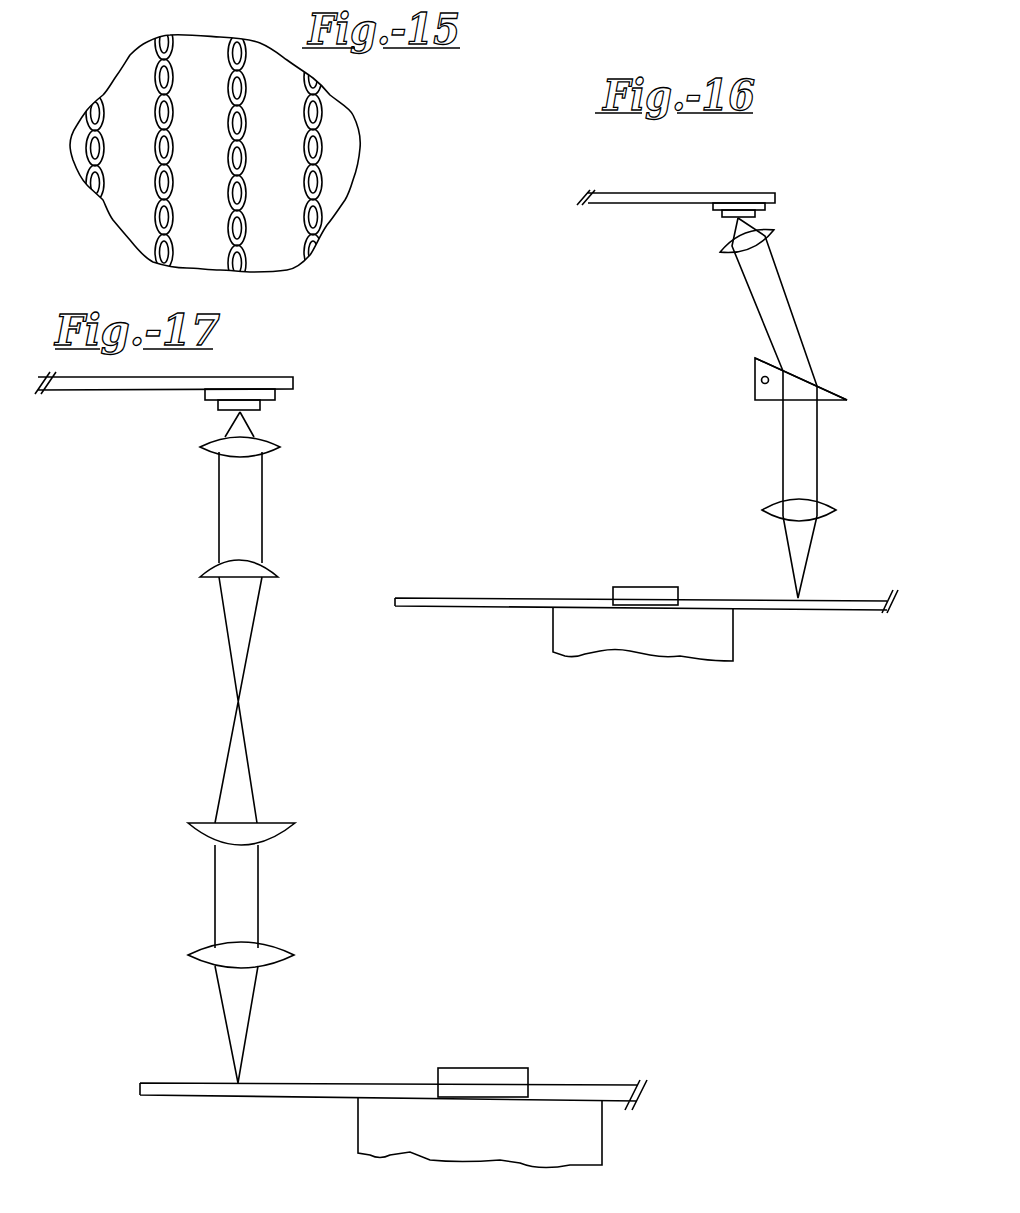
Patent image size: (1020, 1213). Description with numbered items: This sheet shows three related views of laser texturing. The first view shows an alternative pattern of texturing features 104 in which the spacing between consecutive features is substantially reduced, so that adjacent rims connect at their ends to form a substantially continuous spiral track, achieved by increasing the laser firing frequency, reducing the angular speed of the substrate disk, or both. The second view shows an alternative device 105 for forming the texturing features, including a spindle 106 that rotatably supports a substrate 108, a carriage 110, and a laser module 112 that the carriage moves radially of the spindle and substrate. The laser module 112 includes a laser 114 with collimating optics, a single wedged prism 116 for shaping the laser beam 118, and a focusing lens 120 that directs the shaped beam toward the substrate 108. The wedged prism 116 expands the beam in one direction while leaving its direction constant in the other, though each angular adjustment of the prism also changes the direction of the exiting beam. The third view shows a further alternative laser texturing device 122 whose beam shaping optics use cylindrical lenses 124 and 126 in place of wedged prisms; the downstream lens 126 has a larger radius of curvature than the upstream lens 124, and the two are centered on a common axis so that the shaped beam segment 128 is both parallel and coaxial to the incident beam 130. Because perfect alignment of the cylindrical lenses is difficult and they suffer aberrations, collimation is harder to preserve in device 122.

In FIG. 15, the texturing features 104 is at (88, 147).
In FIG. 16, the alternative device 105 is at (718, 163).
In FIG. 16, the spindle 106 is at (735, 637).
In FIG. 16, the substrate 108 is at (468, 598).
In FIG. 16, the carriage 110 is at (647, 197).
In FIG. 16, the laser module 112 is at (759, 352).
In FIG. 16, the laser 114 is at (756, 213).
In FIG. 16, the wedged prism 116 is at (826, 388).
In FIG. 16, the laser beam 118 is at (784, 300).
In FIG. 16, the focusing lens 120 is at (823, 503).
In FIG. 17, the laser texturing device 122 is at (296, 367).
In FIG. 17, the cylindrical lens 124 is at (272, 572).
In FIG. 17, the cylindrical lens 126 is at (277, 822).
In FIG. 17, the shaped beam segment 128 is at (258, 892).
In FIG. 17, the incident beam 130 is at (264, 507).